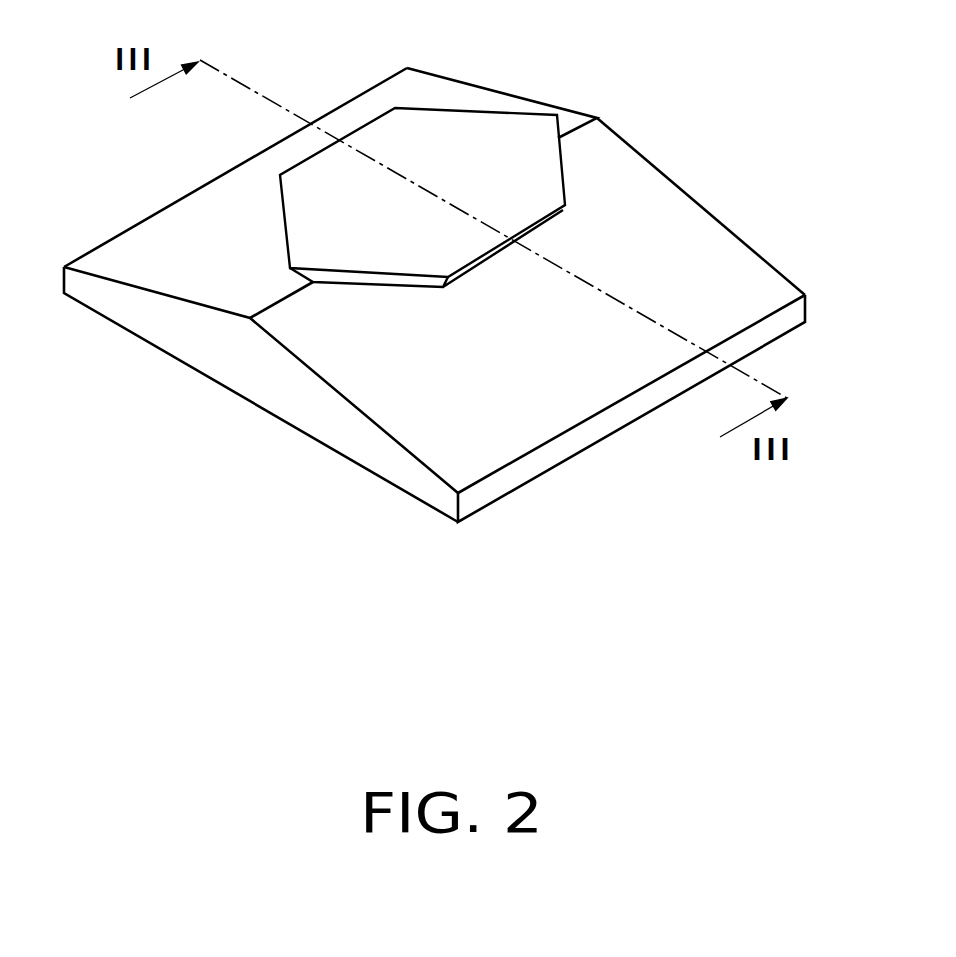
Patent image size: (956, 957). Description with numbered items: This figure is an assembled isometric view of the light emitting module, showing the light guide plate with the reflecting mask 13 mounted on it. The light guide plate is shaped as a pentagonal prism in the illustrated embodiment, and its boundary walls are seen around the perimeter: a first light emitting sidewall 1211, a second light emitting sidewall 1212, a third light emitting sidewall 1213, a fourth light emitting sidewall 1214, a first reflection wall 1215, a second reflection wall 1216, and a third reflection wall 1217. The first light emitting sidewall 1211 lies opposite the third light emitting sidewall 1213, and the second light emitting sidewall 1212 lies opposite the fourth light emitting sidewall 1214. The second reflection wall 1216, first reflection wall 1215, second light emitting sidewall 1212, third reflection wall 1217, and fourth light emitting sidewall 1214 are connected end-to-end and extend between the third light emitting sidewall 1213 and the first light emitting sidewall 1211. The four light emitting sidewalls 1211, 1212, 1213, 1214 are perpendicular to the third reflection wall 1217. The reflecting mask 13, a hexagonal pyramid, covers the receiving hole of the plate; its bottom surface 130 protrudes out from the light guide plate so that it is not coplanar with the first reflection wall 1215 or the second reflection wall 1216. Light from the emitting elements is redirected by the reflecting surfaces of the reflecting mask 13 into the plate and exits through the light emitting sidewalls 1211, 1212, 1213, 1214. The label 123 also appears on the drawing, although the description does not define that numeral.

The reflecting mask 13 is at (414, 147).
The bottom surface 130 is at (389, 148).
The top surface of substrate 123 is at (613, 200).
The first light emitting sidewall 1211 is at (725, 223).
The second light emitting sidewall 1212 is at (235, 163).
The third light emitting sidewall 1213 is at (325, 422).
The fourth light emitting sidewall 1214 is at (660, 387).
The first reflection wall 1215 is at (192, 243).
The second reflection wall 1216 is at (518, 405).
The third reflection wall 1217 is at (230, 392).